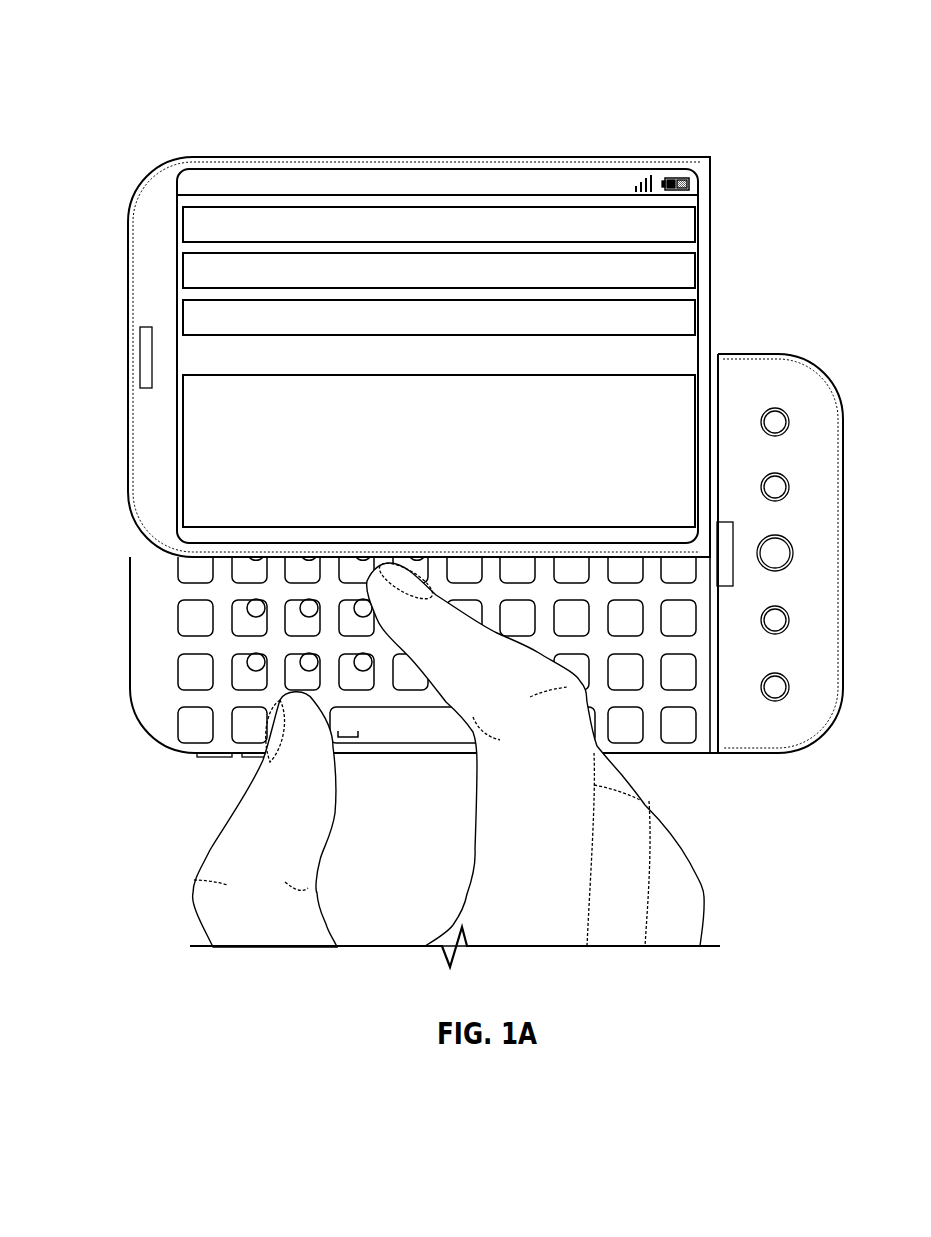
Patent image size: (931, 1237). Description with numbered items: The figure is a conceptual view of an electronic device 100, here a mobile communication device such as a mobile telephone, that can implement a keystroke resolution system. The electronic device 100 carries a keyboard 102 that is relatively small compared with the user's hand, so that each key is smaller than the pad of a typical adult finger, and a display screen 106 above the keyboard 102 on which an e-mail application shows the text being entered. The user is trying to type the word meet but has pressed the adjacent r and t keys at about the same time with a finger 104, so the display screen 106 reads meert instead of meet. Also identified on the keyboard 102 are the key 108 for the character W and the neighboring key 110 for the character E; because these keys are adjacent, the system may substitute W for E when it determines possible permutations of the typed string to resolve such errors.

The electronic device 100 is at (444, 391).
The keyboard 102 is at (128, 668).
The finger 104 is at (546, 812).
The display screen 106 is at (250, 170).
The key corresponding to the character W 108 is at (379, 604).
The key corresponding to the character E 110 is at (297, 560).